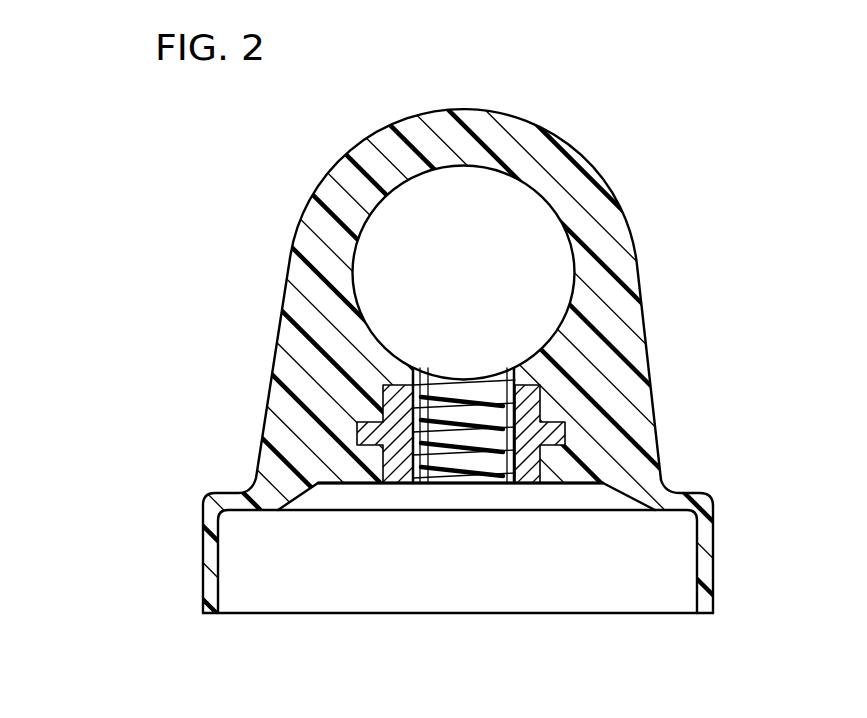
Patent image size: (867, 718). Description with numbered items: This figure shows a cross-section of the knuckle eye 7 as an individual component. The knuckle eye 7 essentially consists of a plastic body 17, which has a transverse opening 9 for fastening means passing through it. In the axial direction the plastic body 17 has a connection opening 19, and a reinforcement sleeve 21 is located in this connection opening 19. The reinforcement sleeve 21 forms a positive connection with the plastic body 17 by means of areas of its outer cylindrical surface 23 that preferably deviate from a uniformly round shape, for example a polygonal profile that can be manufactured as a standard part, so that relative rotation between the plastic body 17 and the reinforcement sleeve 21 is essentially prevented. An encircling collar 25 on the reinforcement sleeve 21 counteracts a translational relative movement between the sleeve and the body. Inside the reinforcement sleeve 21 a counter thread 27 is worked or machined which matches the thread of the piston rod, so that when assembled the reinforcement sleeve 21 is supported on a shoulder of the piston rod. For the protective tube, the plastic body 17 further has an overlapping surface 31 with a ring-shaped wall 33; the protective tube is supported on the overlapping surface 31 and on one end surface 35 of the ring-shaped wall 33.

The knuckle eye 7 is at (150, 352).
The transverse opening 9 is at (508, 226).
The plastic body 17 is at (615, 386).
The connection opening 19 is at (482, 455).
The reinforcement sleeve 21 is at (521, 440).
The outer cylindrical surface 23 is at (543, 457).
The encircling collar 25 is at (370, 437).
The counter thread 27 is at (428, 405).
The overlapping surface 31 is at (678, 492).
The ring-shaped wall 33 is at (710, 545).
The end surface 35 is at (698, 618).